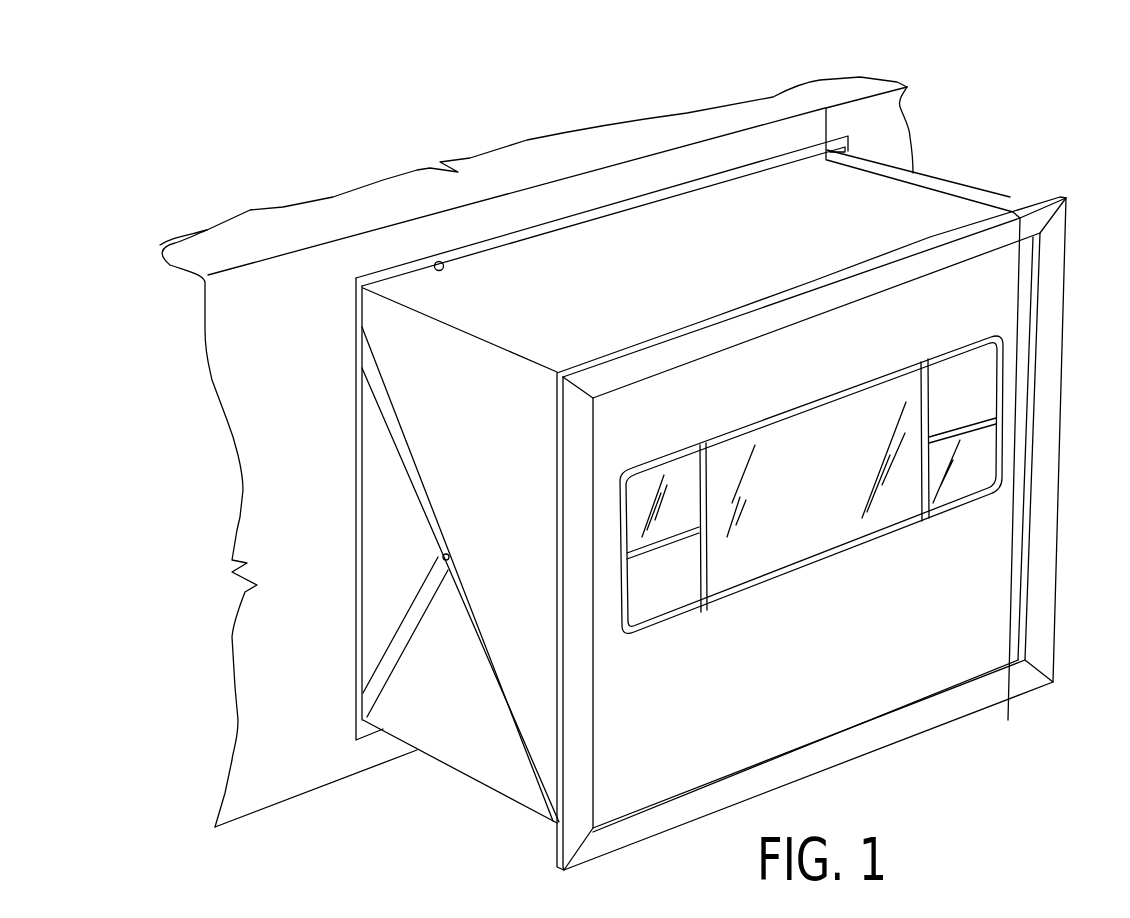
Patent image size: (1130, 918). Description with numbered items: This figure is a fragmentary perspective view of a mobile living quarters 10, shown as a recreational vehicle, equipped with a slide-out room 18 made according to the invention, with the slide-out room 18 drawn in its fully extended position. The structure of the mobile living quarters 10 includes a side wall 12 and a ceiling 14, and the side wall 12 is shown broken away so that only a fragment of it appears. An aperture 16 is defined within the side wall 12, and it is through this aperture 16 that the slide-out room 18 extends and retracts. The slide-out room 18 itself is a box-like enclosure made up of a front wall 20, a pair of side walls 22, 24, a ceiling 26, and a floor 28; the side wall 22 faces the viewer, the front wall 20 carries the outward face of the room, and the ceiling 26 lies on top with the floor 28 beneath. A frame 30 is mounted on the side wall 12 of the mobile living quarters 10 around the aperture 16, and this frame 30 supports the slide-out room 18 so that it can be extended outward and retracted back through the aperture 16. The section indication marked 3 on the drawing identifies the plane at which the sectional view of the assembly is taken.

The mobile living quarters 10 is at (895, 68).
The side wall 12 is at (893, 138).
The ceiling 14 is at (583, 153).
The aperture 16 is at (442, 262).
The slide-out room 18 is at (962, 184).
The front wall 20 is at (851, 663).
The side wall 22 is at (523, 508).
The side wall 24 is at (1007, 197).
The ceiling 26 is at (738, 262).
The floor 28 is at (482, 787).
The frame 30 is at (372, 258).
The section line 3- 3 is at (777, 97).